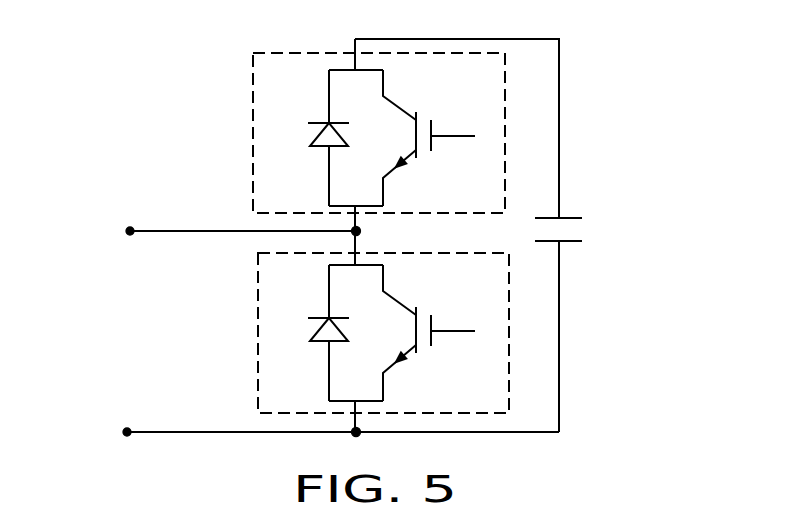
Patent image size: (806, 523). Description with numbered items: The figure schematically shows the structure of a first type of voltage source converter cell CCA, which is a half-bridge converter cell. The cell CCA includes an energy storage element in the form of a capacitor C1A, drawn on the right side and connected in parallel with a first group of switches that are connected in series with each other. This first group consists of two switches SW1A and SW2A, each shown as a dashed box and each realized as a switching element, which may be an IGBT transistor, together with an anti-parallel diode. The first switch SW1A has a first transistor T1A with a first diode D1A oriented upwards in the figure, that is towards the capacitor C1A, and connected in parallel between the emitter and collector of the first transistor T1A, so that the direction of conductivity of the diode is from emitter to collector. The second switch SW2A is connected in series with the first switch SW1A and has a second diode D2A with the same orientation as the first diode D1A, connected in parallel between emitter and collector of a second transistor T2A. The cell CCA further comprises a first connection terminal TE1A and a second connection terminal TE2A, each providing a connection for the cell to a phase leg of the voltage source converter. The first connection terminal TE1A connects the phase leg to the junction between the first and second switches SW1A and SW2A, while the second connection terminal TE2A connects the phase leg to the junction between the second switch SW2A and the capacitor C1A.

The converter cell CCA is at (574, 152).
The capacitor C1A is at (594, 227).
The first connection terminal TE1A is at (193, 229).
The second connection terminal TE2A is at (295, 421).
The first switch SW1A is at (253, 120).
The second switch SW2A is at (259, 343).
The first diode D1A is at (307, 138).
The second diode D2A is at (307, 333).
The first transistor T1A is at (438, 138).
The second transistor T2A is at (442, 333).